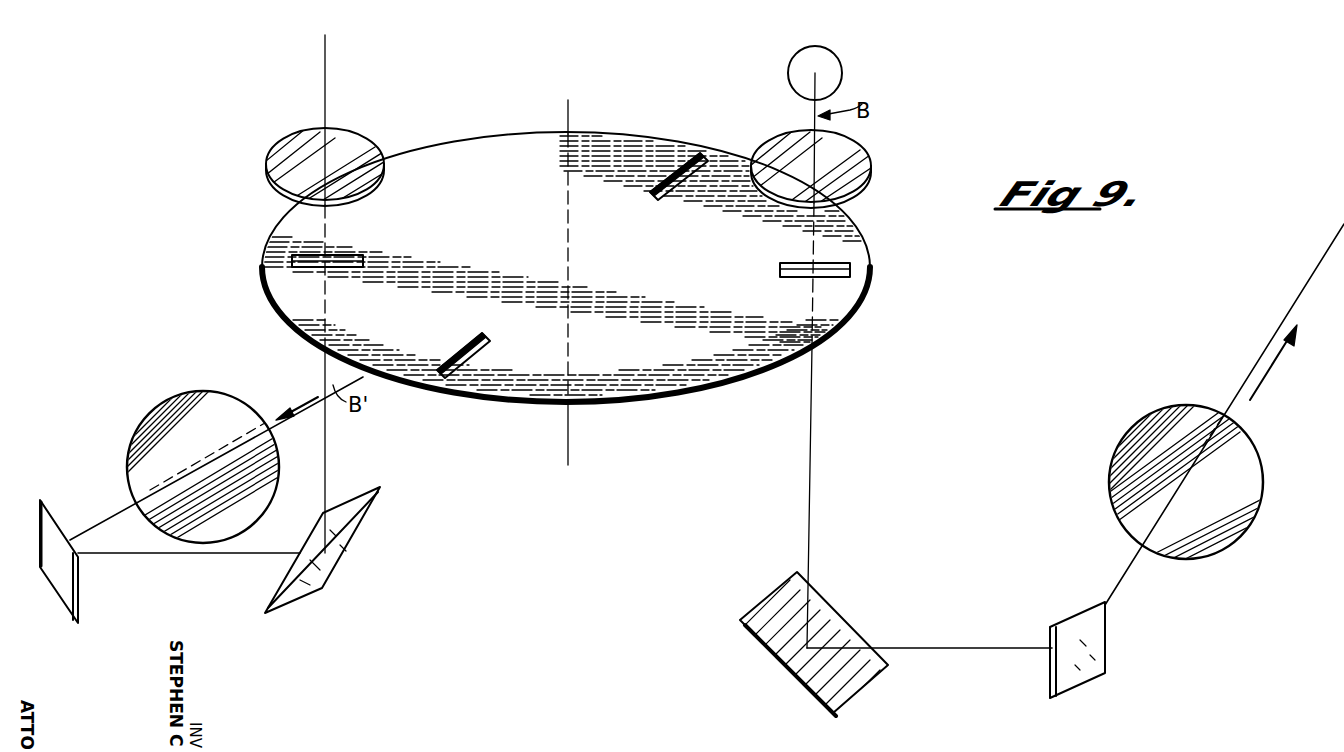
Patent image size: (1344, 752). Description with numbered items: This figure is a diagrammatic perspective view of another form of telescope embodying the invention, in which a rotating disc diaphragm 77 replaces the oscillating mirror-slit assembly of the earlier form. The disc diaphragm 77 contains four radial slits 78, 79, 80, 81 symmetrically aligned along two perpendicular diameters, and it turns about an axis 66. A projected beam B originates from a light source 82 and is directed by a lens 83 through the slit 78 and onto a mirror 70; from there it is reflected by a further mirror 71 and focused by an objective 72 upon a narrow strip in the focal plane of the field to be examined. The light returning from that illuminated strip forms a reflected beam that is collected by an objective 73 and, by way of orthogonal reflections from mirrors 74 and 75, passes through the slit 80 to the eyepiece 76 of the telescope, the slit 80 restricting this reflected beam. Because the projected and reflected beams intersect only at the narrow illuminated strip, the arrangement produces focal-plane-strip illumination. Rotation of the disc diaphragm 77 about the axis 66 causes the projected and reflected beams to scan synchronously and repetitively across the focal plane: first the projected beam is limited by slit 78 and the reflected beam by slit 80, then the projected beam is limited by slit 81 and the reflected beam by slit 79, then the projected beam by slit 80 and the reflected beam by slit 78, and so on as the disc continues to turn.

The axis 66 is at (568, 203).
The mirror 70 is at (760, 640).
The mirror 71 is at (1050, 680).
The objective 72 is at (1195, 557).
The objective 73 is at (205, 392).
The mirror 74 is at (78, 604).
The mirror 75 is at (325, 583).
The eyepiece 76 is at (283, 132).
The disc diaphragm 77 is at (490, 133).
The radial slit 78 is at (845, 262).
The radial slit 79 is at (485, 345).
The radial slit 80 is at (345, 254).
The radial slit 81 is at (688, 160).
The light source 82 is at (842, 78).
The lens 83 is at (860, 161).